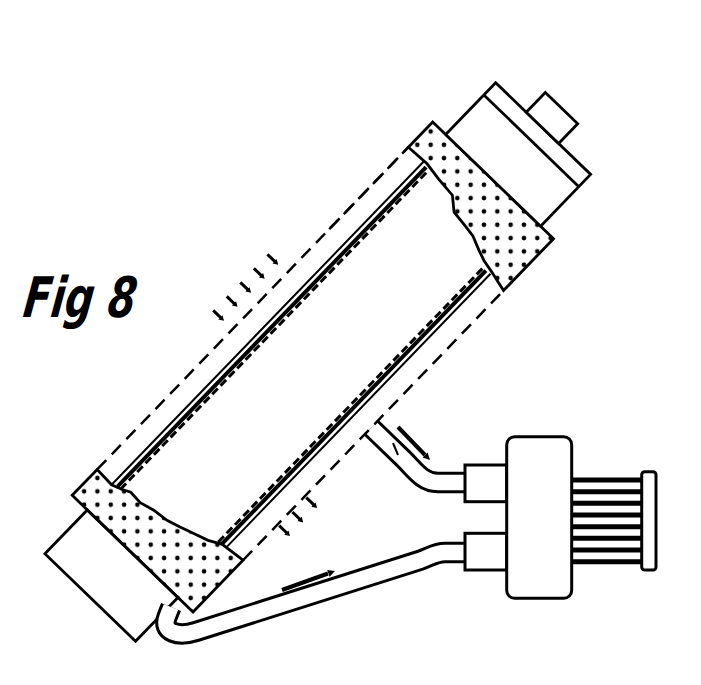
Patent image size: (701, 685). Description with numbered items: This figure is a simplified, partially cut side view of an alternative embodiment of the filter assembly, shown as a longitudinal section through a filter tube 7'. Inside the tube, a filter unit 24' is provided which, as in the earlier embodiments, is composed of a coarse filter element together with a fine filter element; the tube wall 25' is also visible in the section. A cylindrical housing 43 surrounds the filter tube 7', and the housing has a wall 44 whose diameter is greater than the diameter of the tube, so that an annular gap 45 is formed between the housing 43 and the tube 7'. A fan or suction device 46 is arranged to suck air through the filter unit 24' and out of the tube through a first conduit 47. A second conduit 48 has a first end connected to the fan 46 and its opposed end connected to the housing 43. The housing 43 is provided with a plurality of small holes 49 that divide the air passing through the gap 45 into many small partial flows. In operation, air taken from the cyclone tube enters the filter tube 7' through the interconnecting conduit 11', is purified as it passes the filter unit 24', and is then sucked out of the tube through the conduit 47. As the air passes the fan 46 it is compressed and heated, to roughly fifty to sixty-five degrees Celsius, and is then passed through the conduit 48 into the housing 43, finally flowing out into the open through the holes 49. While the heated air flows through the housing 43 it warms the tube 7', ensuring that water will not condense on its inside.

The filter tube 7' is at (313, 366).
The interconnecting conduit 11' is at (568, 110).
The filter unit 24' is at (313, 366).
The tube wall 25' is at (313, 367).
The cylindrical housing 43 is at (431, 116).
The wall 44 is at (382, 169).
The annular gap 45 is at (348, 210).
The fan or suction device 46 is at (538, 590).
The first conduit 47 is at (341, 594).
The second conduit 48 is at (410, 472).
The small holes 49 is at (126, 528).